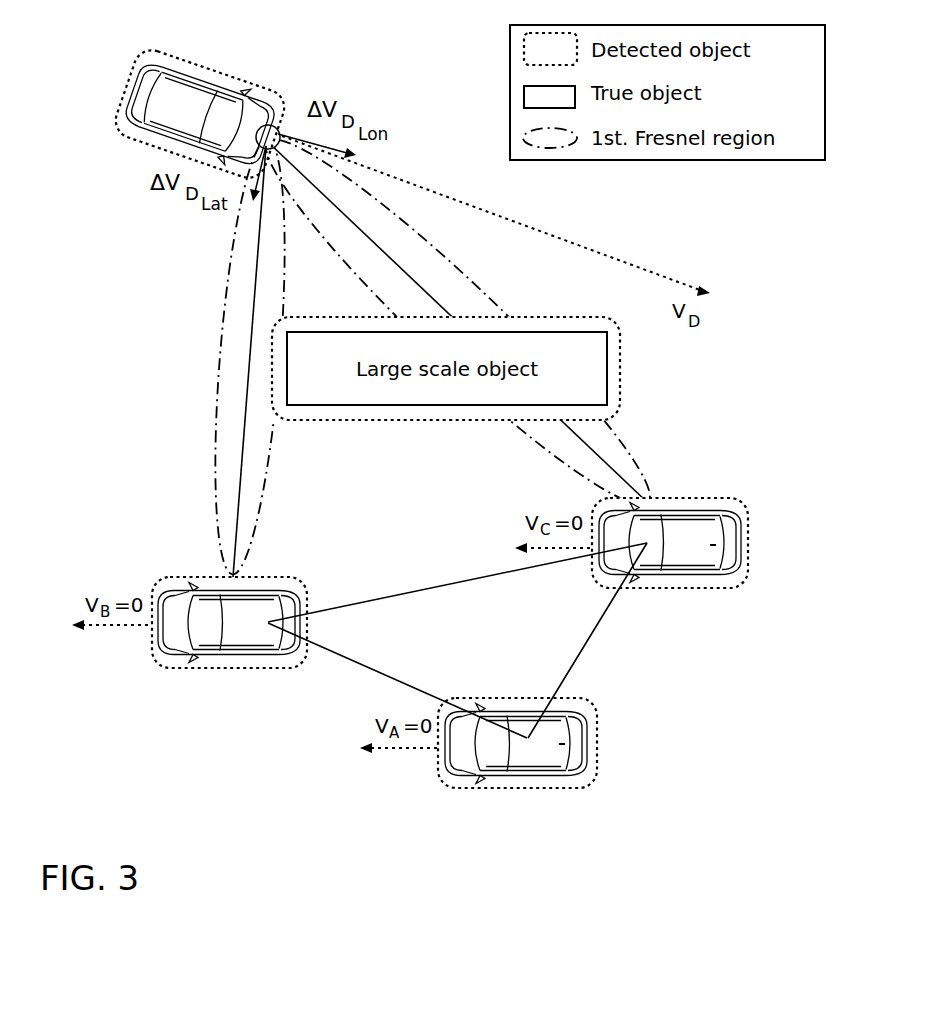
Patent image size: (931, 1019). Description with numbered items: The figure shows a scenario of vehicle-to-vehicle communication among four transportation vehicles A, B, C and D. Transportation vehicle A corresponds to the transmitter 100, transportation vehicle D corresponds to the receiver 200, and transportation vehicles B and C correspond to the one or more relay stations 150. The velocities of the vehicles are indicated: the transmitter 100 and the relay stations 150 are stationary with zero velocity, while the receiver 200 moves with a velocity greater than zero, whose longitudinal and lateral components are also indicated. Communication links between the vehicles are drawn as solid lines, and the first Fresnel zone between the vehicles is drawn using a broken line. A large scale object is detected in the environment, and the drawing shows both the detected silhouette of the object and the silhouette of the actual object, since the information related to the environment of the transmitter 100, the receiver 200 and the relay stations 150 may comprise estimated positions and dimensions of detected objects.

The transmitter 100 is at (488, 789).
The relay stations 150 is at (199, 669).
The receiver 200 is at (216, 71).